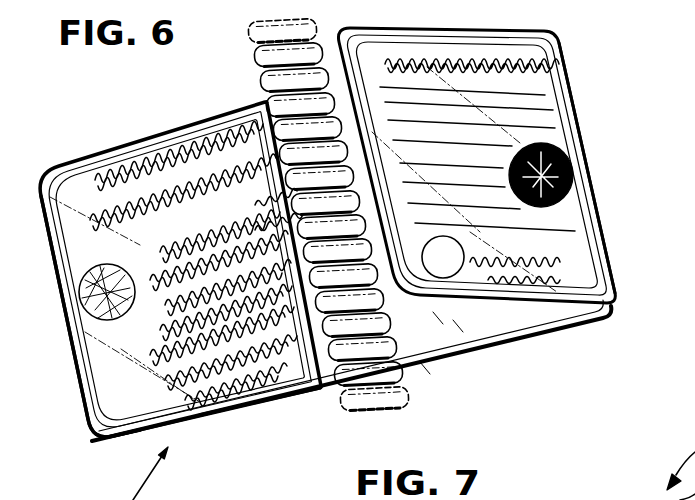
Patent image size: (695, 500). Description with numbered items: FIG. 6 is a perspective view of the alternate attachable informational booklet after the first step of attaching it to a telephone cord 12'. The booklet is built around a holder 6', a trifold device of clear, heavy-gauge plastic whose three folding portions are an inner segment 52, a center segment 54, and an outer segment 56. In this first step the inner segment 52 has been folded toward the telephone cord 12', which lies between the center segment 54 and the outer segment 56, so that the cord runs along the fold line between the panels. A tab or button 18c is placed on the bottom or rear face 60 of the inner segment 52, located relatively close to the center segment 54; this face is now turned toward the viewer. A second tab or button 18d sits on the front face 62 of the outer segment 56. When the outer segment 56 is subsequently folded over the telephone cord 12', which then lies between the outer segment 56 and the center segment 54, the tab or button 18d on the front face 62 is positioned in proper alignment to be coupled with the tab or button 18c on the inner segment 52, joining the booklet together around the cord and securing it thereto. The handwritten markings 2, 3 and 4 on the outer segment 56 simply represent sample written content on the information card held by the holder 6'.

The holder 6' is at (180, 257).
The inner segment 52 is at (472, 68).
The center segment 54 is at (457, 332).
The telephone cord 12' is at (351, 224).
The tab or button 18c is at (574, 158).
The tab or button 18d is at (84, 328).
The rear face 60 is at (612, 268).
The outer segment 56 is at (243, 374).
The front face 62 is at (133, 405).
The handwritten list item 2 is at (211, 236).
The handwritten list item 3 is at (212, 324).
The handwritten list item 4 is at (216, 386).